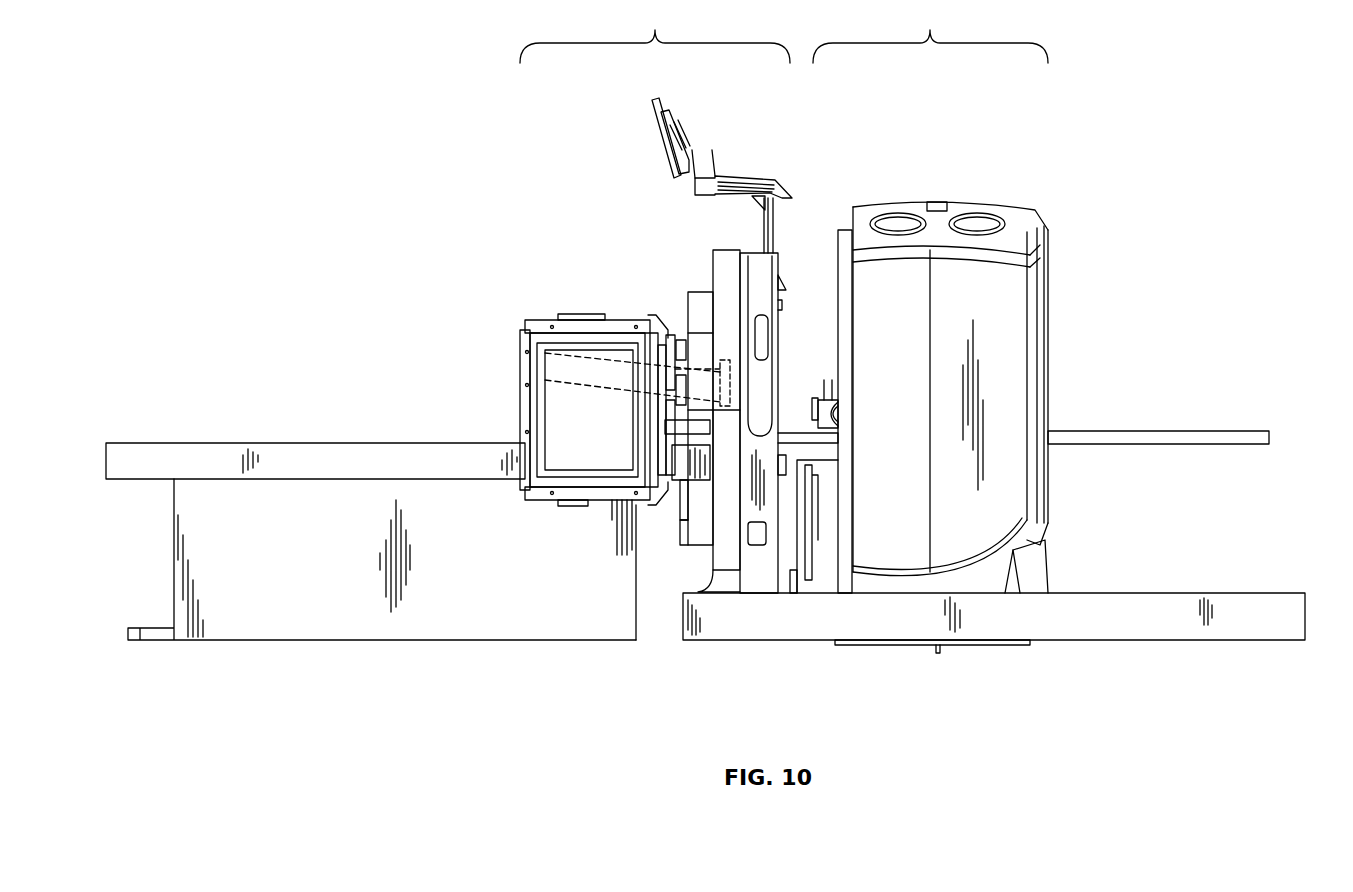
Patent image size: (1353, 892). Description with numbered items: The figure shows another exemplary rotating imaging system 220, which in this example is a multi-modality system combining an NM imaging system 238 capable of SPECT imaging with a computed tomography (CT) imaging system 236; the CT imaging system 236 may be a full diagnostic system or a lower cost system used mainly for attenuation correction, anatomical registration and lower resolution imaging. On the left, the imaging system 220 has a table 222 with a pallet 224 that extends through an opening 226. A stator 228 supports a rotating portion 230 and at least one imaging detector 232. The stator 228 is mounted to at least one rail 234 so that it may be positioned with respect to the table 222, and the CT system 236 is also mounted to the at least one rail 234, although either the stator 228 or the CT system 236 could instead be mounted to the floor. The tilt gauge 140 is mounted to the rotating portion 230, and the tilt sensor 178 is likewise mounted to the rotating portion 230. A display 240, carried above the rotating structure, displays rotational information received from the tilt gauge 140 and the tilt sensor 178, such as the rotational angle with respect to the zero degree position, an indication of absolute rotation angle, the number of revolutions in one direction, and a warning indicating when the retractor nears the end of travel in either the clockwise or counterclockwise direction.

The rotating imaging system 220 is at (233, 124).
The table 222 is at (233, 436).
The pallet 224 is at (1180, 430).
The opening 226 is at (1070, 366).
The stator 228 is at (765, 570).
The rotating portion 230 is at (712, 262).
The imaging detector 232 is at (535, 312).
The rail 234 is at (1175, 628).
The CT imaging system 236 is at (930, 32).
The NM imaging system 238 is at (655, 32).
The display 240 is at (662, 135).
The tilt sensor 178 is at (525, 352).
The tilt gauge 140 is at (525, 378).